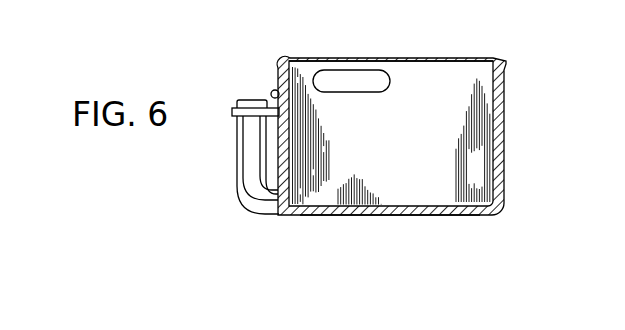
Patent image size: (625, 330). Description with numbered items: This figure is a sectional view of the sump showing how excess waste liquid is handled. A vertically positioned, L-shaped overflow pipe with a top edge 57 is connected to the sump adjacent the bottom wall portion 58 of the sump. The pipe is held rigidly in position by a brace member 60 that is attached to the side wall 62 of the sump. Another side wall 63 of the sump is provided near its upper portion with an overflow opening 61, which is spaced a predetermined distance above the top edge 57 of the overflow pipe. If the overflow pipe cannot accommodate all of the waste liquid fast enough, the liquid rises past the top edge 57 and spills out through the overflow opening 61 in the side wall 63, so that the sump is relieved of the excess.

The top edge 57 is at (246, 101).
The bottom wall portion 58 is at (408, 217).
The brace member 60 is at (233, 118).
The overflow opening 61 is at (357, 76).
The side wall 62 is at (290, 140).
The side wall 63 is at (438, 90).